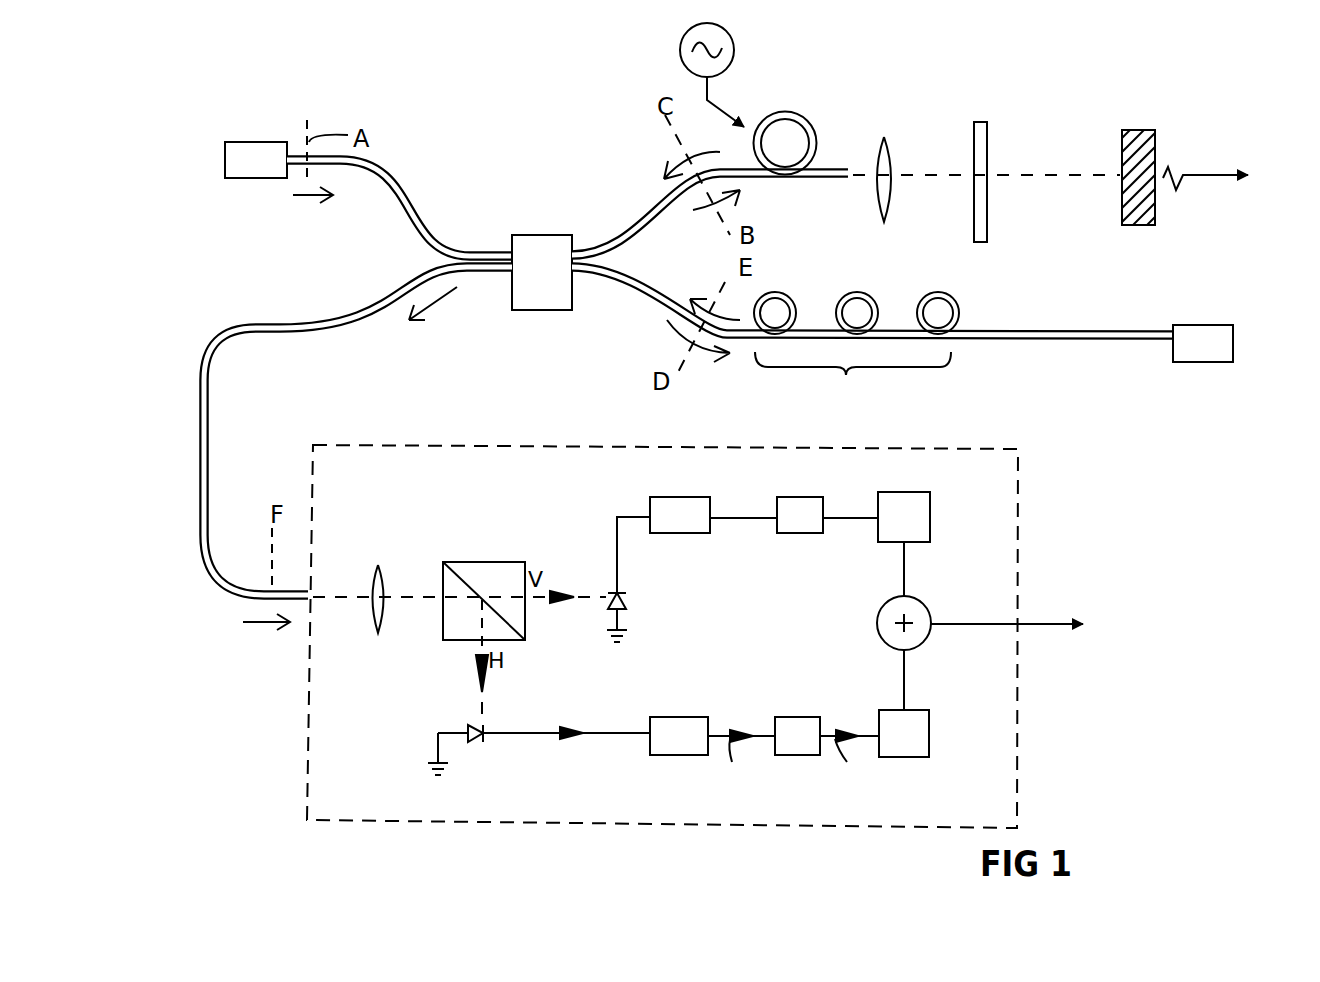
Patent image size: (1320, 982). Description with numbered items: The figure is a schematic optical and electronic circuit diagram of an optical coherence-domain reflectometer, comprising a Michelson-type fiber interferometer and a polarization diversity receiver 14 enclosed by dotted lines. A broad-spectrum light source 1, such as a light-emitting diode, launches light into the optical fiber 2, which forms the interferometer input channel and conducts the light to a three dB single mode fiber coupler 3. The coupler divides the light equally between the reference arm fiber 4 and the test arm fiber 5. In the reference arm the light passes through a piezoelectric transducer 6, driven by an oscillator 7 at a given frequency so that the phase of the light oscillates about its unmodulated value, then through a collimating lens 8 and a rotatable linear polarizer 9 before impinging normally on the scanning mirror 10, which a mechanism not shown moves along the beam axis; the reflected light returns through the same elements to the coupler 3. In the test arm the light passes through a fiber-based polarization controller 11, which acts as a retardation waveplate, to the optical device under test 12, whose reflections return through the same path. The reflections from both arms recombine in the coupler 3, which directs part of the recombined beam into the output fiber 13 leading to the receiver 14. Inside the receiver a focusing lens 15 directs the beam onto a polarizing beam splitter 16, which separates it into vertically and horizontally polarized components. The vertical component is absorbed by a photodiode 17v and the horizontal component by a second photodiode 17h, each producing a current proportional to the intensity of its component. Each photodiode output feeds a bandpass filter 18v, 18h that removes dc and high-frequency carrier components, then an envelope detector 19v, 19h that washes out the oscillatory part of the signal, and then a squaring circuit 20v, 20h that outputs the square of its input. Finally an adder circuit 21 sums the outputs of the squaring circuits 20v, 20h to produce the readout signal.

The light source 1 is at (264, 180).
The optical fiber 2 is at (370, 167).
The 3 dB single mode fiber coupler 3 is at (548, 233).
The reference arm fiber 4 is at (632, 234).
The test arm fiber 5 is at (642, 288).
The piezoelectric transducer 6 is at (783, 178).
The oscillator 7 is at (734, 50).
The collimating lens 8 is at (885, 137).
The linear polarizer 9 is at (984, 122).
The scanning mirror 10 is at (1137, 130).
The polarization controller 11 is at (846, 375).
The optical device under test 12 is at (1207, 325).
The output fiber 13 is at (353, 330).
The polarization diversity receiver 14 is at (1015, 452).
The focusing lens 15 is at (378, 565).
The polarizing beam splitter 16 is at (443, 563).
The photodiode 17v is at (612, 593).
The second photodiode 17h is at (483, 735).
The bandpass filter 18v is at (680, 495).
The bandpass filter 18h is at (678, 715).
The envelope detector 19v is at (800, 495).
The envelope detector 19h is at (802, 717).
The squaring circuit 20v is at (902, 492).
The squaring circuit 20h is at (970, 752).
The adder circuit 21 is at (877, 615).